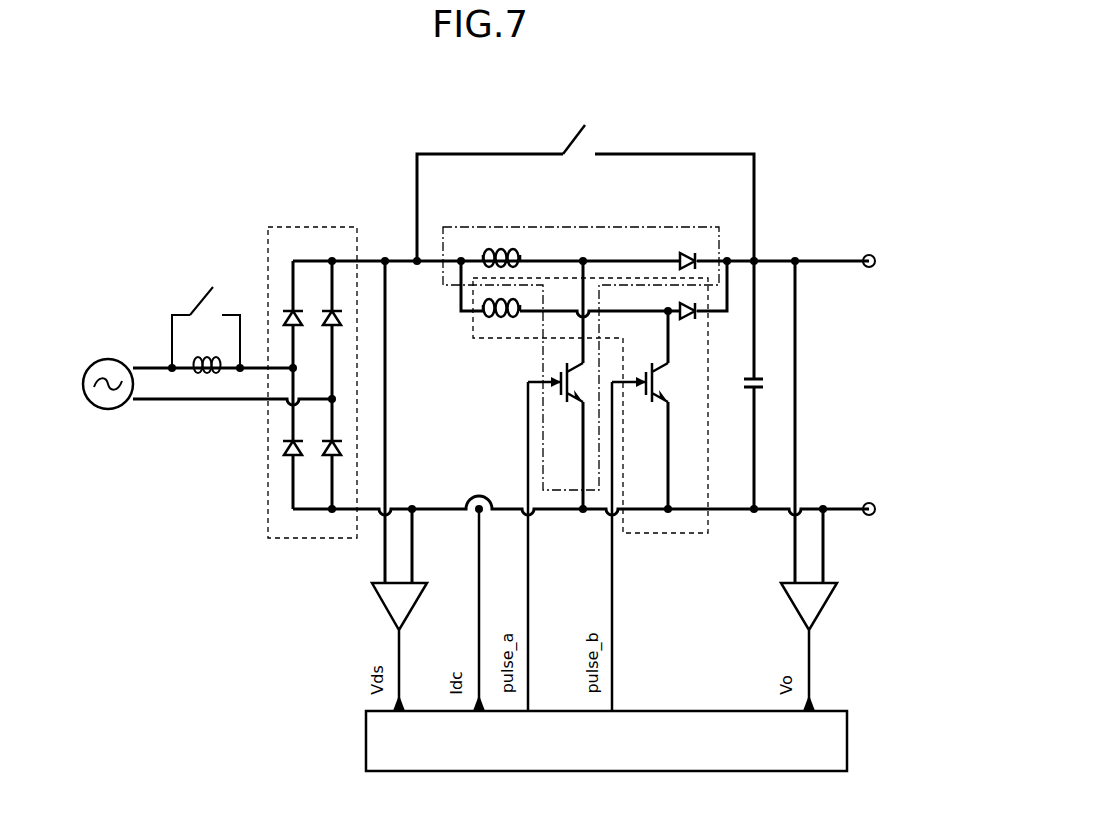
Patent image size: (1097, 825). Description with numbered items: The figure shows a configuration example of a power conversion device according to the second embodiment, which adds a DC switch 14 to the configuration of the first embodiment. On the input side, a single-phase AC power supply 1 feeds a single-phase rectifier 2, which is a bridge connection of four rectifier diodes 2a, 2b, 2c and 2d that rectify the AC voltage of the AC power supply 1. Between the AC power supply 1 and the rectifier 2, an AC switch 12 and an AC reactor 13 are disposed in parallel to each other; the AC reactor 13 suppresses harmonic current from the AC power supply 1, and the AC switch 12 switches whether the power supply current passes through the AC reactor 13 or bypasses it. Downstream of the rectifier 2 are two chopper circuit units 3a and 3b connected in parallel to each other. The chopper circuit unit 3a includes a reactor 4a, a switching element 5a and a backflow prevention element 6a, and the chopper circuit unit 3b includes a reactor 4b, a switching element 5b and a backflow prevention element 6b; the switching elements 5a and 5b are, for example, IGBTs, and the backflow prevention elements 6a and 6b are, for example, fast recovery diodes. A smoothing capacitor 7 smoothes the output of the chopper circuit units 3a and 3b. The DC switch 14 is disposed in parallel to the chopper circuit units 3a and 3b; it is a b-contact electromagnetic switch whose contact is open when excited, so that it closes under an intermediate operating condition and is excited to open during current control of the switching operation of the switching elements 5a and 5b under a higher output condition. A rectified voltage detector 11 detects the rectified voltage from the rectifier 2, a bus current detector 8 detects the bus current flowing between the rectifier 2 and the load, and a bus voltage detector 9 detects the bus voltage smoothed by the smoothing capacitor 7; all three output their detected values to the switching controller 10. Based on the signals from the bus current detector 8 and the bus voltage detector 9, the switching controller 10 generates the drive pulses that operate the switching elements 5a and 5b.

The single-phase AC power supply 1 is at (108, 358).
The single-phase rectifier 2 is at (268, 243).
The rectifier diode 2a is at (292, 305).
The rectifier diode 2b is at (332, 305).
The rectifier diode 2c is at (292, 458).
The rectifier diode 2d is at (332, 458).
The chopper circuit unit 3a is at (573, 227).
The chopper circuit unit 3b is at (668, 535).
The reactor 4a is at (508, 246).
The reactor 4b is at (502, 322).
The switching element 5a is at (560, 390).
The switching element 5b is at (658, 385).
The backflow prevention element 6a is at (687, 256).
The backflow prevention element 6b is at (684, 308).
The smoothing capacitor 7 is at (757, 378).
The bus current detector 8 is at (479, 494).
The bus voltage detector 9 is at (788, 600).
The switching controller 10 is at (690, 711).
The rectified voltage detector 11 is at (380, 600).
The AC switch 12 is at (186, 312).
The AC reactor 13 is at (211, 378).
The DC switch 14 is at (578, 143).